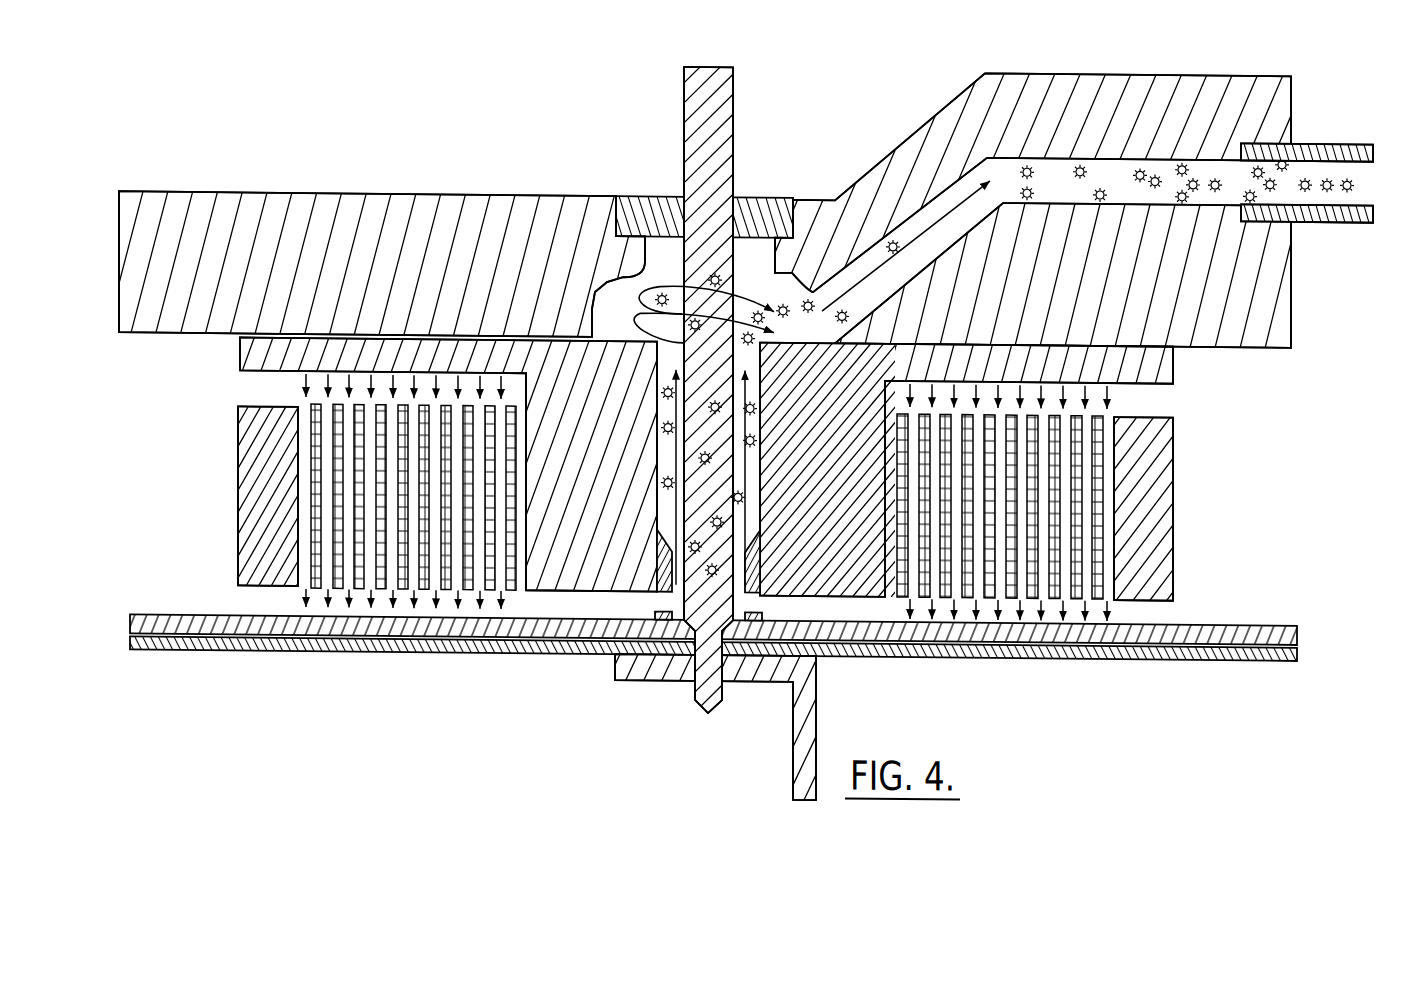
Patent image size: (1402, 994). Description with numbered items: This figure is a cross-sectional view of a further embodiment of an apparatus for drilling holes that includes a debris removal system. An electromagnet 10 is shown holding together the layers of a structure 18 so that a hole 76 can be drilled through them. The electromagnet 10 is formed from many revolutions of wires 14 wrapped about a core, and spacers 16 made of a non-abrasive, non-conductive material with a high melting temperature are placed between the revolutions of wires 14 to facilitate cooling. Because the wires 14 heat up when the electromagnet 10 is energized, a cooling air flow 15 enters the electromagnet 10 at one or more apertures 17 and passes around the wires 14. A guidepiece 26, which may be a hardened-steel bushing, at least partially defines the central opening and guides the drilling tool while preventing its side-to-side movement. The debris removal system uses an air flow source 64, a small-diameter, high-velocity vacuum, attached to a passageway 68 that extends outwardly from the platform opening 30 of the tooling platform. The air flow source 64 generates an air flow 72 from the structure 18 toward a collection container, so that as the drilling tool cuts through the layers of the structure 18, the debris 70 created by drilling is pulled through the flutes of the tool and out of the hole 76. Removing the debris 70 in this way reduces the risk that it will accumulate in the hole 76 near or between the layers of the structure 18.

The electromagnet 10 is at (203, 498).
The wires 14 is at (1102, 556).
The air flow 15 is at (280, 395).
The spacers 16 is at (1113, 569).
The apertures 17 is at (238, 403).
The structure 18 is at (1037, 658).
The guidepiece 26 is at (662, 600).
The platform opening 30 is at (757, 266).
The air flow source 64 is at (1339, 134).
The passageway 68 is at (997, 175).
The debris 70 is at (713, 278).
The air flow 72 is at (668, 280).
The hole 76 is at (720, 637).